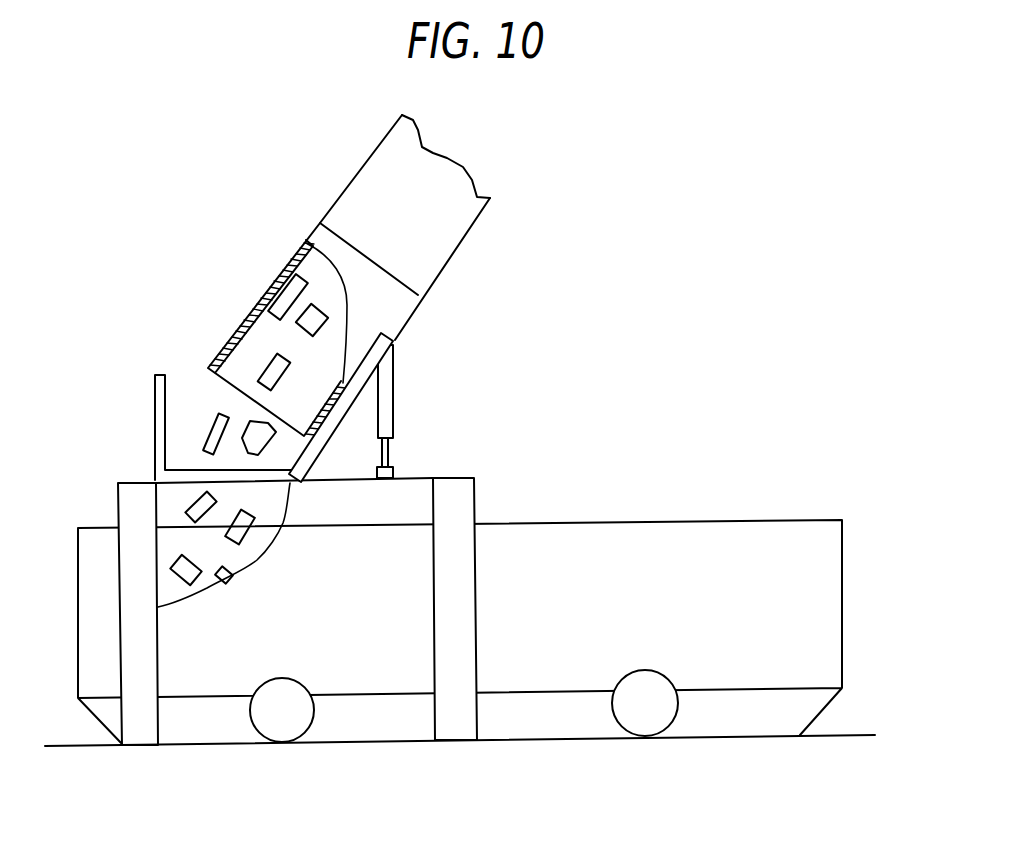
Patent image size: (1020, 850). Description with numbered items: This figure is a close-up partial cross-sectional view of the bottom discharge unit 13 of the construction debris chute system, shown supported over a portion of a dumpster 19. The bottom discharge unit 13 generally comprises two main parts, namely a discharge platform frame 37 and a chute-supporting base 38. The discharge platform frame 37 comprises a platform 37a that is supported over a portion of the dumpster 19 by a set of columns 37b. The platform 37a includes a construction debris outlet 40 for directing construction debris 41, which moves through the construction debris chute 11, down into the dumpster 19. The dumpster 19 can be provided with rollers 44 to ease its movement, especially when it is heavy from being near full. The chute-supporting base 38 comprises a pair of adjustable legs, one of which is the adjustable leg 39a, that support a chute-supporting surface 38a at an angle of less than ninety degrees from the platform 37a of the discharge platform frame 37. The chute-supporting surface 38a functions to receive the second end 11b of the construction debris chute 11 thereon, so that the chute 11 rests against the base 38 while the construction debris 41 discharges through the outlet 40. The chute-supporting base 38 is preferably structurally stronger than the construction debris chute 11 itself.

The construction debris chute 11 is at (462, 249).
The second end of the construction debris chute 11b is at (233, 390).
The bottom discharge unit 13 is at (351, 275).
The dumpster 19 is at (843, 568).
The discharge platform frame 37 is at (305, 598).
The platform 37a is at (436, 478).
The columns 37b is at (147, 735).
The chute-supporting base 38 is at (397, 379).
The chute-supporting surface 38a is at (395, 340).
The adjustable leg 39a is at (395, 412).
The construction debris outlet 40 is at (192, 480).
The construction debris 41 is at (310, 322).
The rollers 44 is at (289, 754).